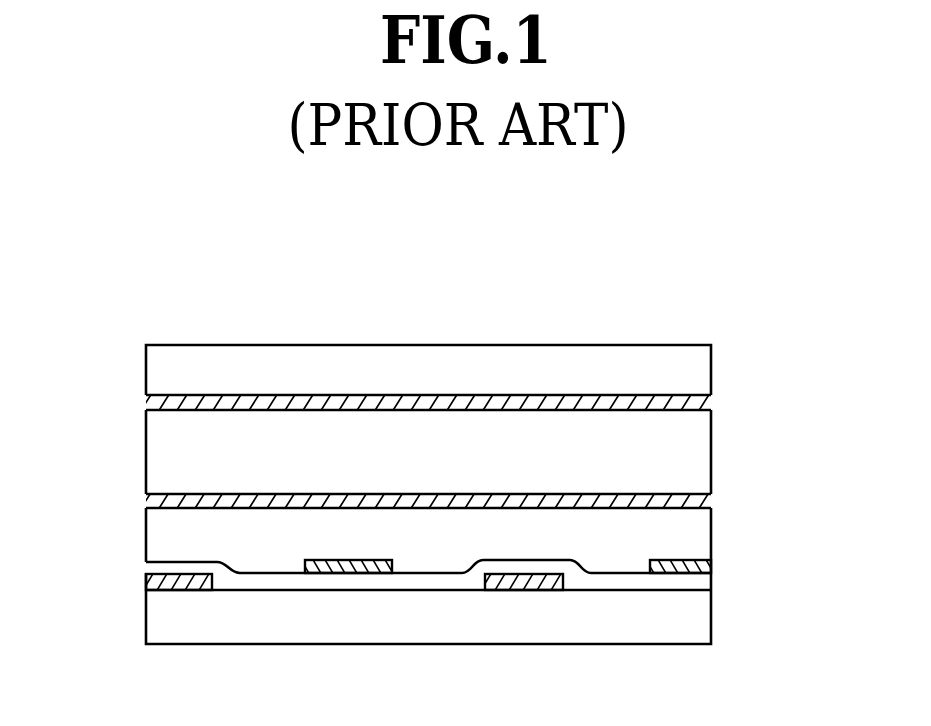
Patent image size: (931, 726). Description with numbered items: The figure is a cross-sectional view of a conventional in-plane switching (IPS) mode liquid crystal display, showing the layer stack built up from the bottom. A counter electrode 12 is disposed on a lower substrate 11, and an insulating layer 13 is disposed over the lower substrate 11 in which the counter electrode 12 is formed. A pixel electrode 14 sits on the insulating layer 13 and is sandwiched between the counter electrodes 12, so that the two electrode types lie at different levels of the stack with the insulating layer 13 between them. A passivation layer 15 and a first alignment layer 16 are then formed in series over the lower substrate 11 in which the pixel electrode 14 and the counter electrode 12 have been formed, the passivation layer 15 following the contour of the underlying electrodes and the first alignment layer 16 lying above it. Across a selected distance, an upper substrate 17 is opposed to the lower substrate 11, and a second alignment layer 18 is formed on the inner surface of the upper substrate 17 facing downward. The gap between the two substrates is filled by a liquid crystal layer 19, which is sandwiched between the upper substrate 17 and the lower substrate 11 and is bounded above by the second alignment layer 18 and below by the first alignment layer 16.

The lower substrate 11 is at (693, 634).
The counter electrode 12 is at (158, 581).
The insulating layer 13 is at (693, 582).
The pixel electrode 14 is at (713, 560).
The passivation layer 15 is at (158, 533).
The first alignment layer 16 is at (702, 496).
The upper substrate 17 is at (693, 371).
The second alignment layer 18 is at (702, 399).
The liquid crystal layer 19 is at (158, 443).